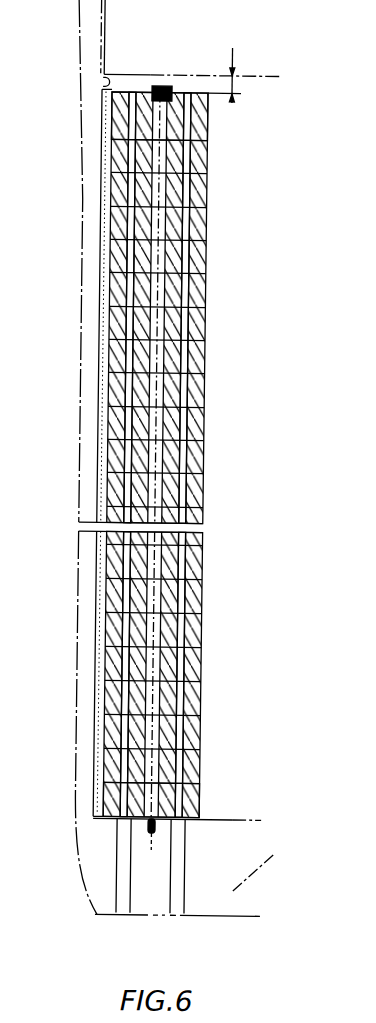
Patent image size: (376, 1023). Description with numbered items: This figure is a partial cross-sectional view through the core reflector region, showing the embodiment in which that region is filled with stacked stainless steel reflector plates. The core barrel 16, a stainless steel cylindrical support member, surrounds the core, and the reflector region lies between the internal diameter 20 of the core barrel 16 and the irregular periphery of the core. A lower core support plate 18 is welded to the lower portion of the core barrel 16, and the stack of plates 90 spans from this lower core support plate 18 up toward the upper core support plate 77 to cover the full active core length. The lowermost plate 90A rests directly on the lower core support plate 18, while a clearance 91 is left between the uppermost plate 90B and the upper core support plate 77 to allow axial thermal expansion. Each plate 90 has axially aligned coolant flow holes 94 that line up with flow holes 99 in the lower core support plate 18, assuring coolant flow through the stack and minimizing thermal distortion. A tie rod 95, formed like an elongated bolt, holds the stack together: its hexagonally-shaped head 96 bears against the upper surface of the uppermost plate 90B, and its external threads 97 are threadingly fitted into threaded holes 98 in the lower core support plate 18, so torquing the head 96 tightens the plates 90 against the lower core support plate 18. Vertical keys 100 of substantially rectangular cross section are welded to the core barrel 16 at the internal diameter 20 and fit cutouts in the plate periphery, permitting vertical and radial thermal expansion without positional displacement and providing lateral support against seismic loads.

The core barrel 16 is at (84, 206).
The lower core support plate 18 is at (282, 854).
The internal diameter of the core barrel 20 is at (100, 74).
The upper core support plate 77 is at (273, 66).
The plate 90 is at (210, 390).
The lowermost plate 90A is at (208, 802).
The uppermost plate 90B is at (210, 110).
The clearance 91 is at (234, 85).
The coolant flow holes 94 is at (132, 324).
The tie rod 95 is at (162, 265).
The hexagonally-shaped head 96 is at (173, 88).
The external threads 97 is at (166, 825).
The threaded holes 98 is at (166, 836).
The flow holes 99 is at (132, 917).
The vertical keys 100 is at (106, 388).